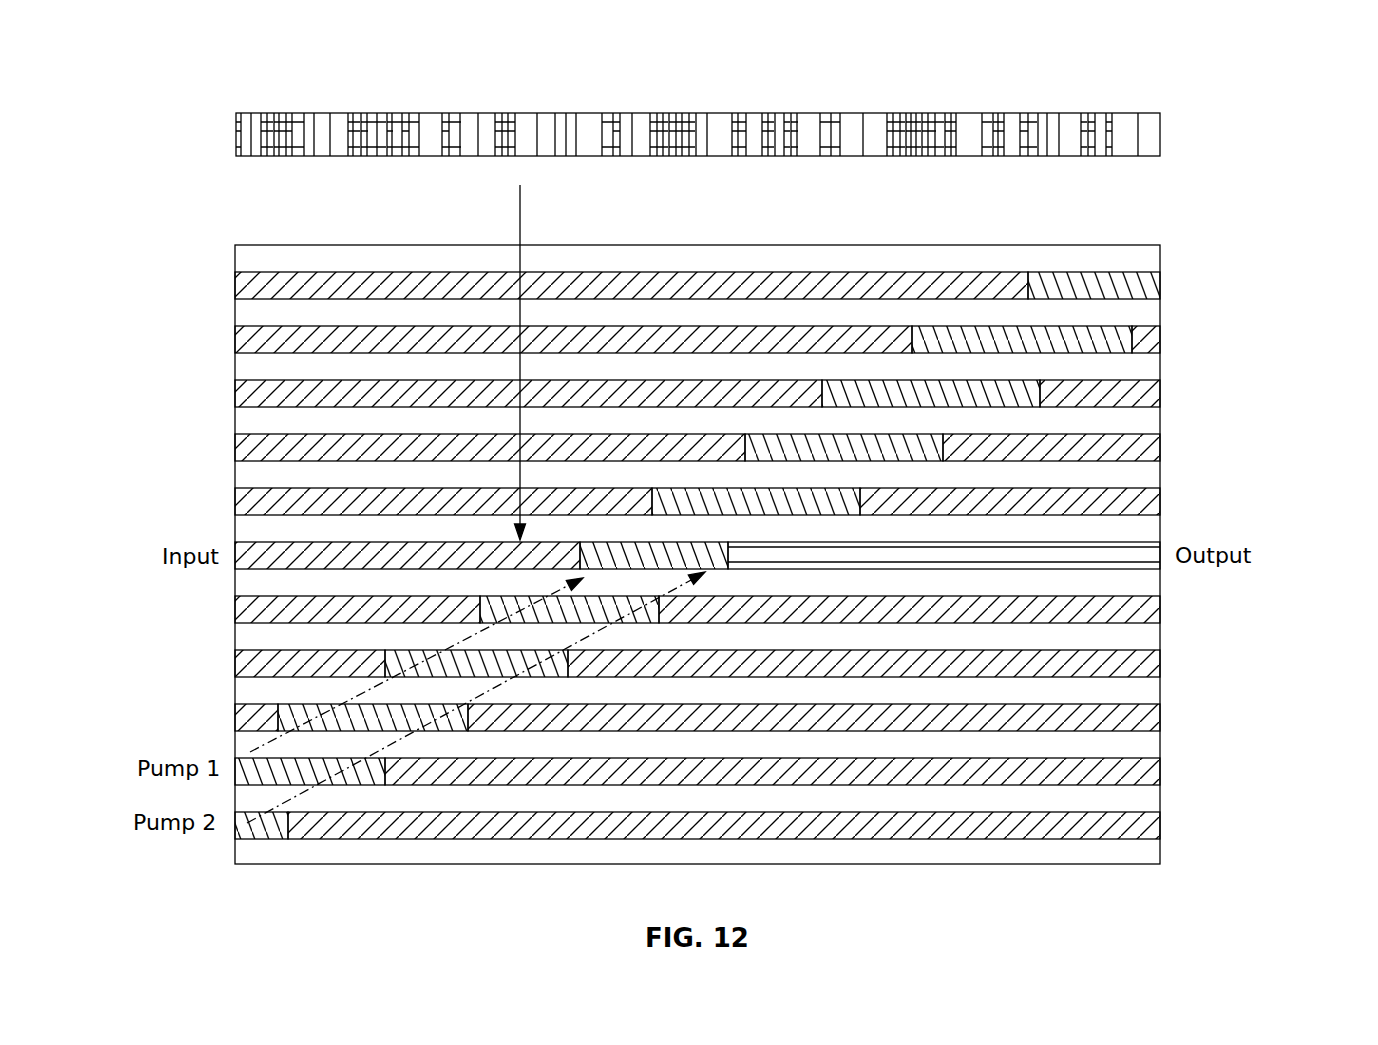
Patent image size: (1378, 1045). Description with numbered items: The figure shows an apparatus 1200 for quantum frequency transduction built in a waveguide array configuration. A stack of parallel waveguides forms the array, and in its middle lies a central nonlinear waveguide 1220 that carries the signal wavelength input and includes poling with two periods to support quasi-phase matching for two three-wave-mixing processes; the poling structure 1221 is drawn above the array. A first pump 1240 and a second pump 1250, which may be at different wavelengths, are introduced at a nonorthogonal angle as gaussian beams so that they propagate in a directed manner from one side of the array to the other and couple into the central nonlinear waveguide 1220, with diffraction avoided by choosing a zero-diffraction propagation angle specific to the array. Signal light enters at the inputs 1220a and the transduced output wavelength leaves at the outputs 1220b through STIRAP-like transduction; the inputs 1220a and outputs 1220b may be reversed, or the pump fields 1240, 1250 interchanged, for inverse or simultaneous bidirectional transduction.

The apparatus for quantum frequency transduction 1200 is at (170, 62).
The grating / electrode pattern 1221 is at (862, 113).
The inputs 1220a is at (234, 443).
The central nonlinear waveguide 1220 is at (302, 552).
The outputs 1220b is at (1162, 603).
The first pump 1240 is at (320, 717).
The second pump 1250 is at (337, 776).